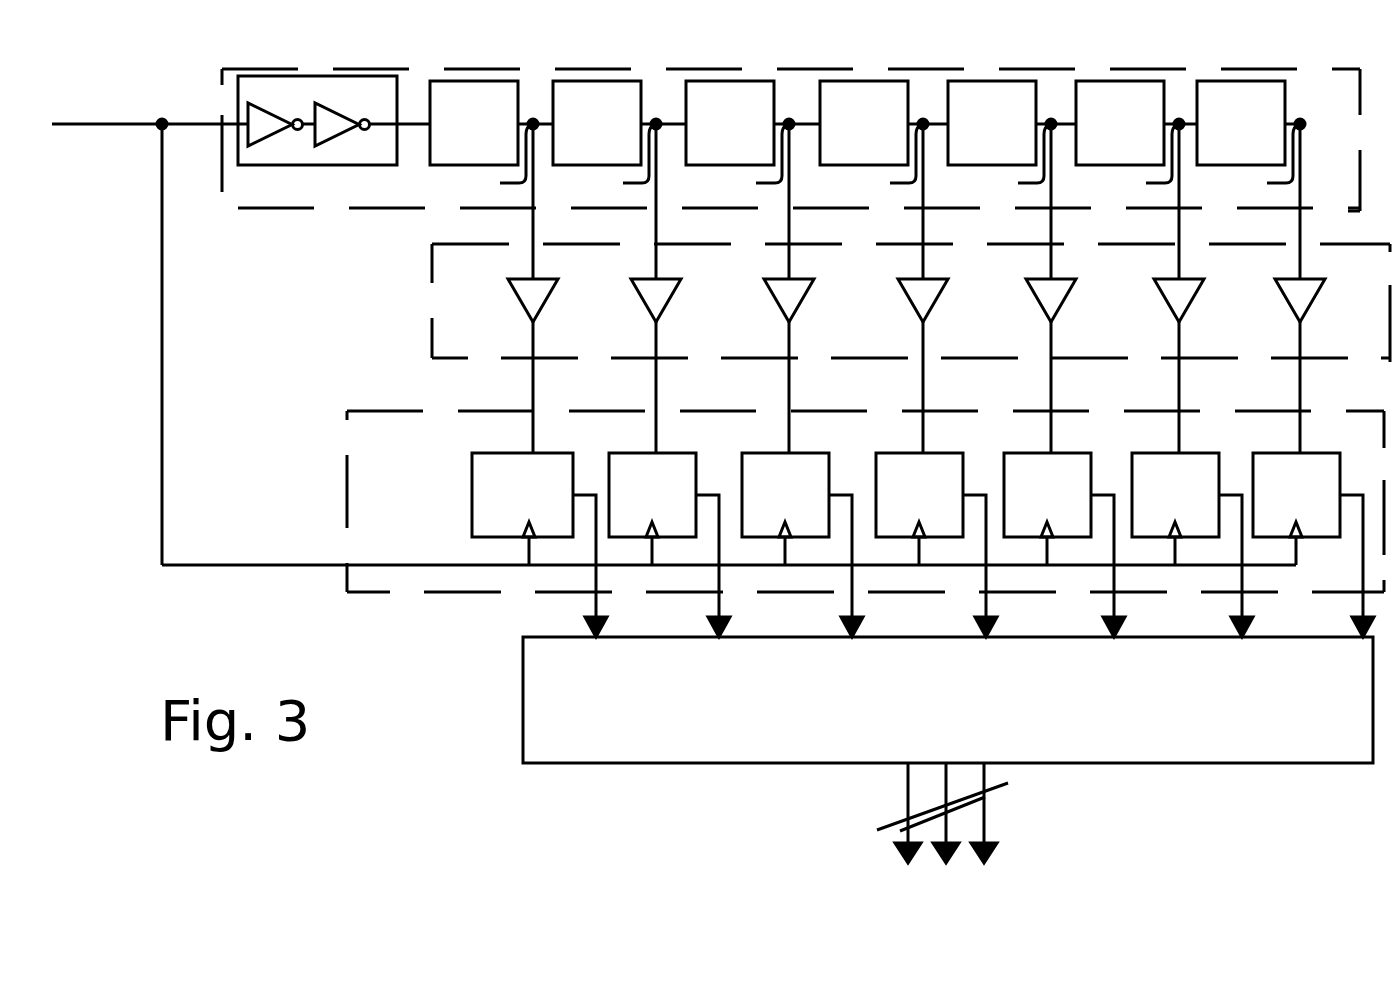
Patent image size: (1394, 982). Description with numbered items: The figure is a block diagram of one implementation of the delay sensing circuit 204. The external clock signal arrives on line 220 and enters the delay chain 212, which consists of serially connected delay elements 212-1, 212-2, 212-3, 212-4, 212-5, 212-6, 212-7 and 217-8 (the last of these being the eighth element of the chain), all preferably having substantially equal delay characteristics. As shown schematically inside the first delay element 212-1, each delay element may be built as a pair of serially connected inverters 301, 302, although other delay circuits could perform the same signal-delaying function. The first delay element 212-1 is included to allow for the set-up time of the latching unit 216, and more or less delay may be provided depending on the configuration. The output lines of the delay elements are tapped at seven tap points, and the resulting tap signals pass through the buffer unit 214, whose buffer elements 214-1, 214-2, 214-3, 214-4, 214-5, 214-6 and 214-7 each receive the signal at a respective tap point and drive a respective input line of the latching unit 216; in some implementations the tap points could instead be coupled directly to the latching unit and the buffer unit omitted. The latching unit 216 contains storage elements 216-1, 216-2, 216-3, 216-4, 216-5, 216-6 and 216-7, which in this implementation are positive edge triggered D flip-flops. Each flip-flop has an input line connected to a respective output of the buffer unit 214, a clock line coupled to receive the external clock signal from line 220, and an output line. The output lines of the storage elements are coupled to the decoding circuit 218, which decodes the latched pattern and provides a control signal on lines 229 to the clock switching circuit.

The delay sensing circuit 204 is at (140, 53).
The line 220 is at (674, 331).
The delay chain 212 is at (258, 68).
The delay element 212-1 is at (326, 63).
The inverter 301 is at (259, 106).
The inverter 302 is at (331, 106).
The delay element 212-2 is at (480, 68).
The delay element 212-3 is at (603, 68).
The delay element 212-4 is at (736, 68).
The delay element 212-5 is at (870, 68).
The delay element 212-6 is at (998, 68).
The delay element 212-7 is at (1126, 68).
The delay element 217-8 is at (1247, 68).
The buffer unit 214 is at (413, 305).
The buffer element 214-1 is at (538, 279).
The buffer element 214-2 is at (661, 279).
The buffer element 214-3 is at (794, 279).
The buffer element 214-4 is at (928, 279).
The buffer element 214-5 is at (1056, 279).
The buffer element 214-6 is at (1184, 279).
The buffer element 214-7 is at (1305, 279).
The latching unit 216 is at (327, 480).
The storage element 216-1 is at (539, 452).
The storage element 216-2 is at (662, 452).
The storage element 216-3 is at (795, 452).
The storage element 216-4 is at (929, 452).
The storage element 216-5 is at (1057, 452).
The storage element 216-6 is at (1185, 452).
The storage element 216-7 is at (1306, 452).
The decoding circuit 218 is at (505, 703).
The lines 229 is at (938, 821).